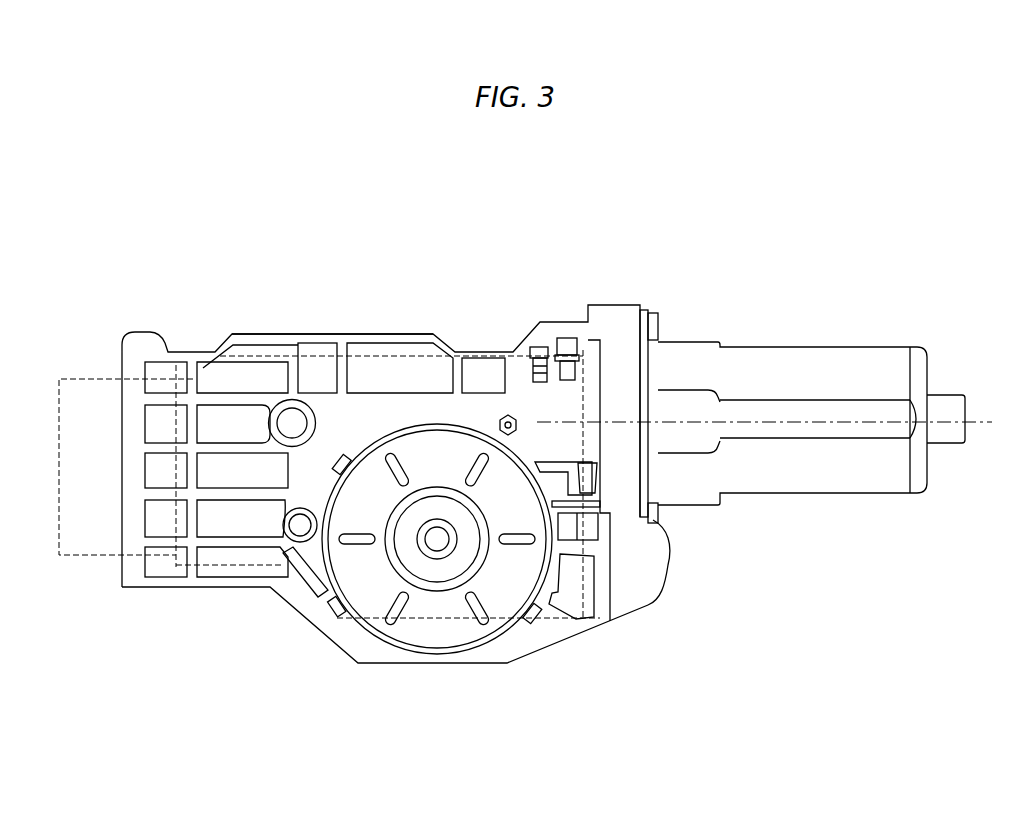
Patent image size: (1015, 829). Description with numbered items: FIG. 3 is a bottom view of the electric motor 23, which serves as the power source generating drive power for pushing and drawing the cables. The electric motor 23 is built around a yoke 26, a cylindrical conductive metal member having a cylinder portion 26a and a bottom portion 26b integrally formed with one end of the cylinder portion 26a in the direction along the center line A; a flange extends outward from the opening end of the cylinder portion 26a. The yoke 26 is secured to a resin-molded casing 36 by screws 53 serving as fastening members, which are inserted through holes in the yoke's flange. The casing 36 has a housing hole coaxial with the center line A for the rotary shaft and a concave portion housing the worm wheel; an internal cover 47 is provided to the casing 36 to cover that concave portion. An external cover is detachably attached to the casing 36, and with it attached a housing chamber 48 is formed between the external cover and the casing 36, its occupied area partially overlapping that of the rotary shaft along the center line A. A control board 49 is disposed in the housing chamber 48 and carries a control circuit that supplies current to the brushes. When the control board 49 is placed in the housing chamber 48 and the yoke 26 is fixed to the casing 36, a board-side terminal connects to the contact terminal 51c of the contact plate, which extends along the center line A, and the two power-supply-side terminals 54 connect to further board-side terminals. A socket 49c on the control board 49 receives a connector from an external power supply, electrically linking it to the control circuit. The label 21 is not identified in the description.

The gear housing 21 is at (636, 636).
The electric motor 23 is at (759, 282).
The yoke 26 is at (811, 407).
The cylinder portion 26a is at (813, 477).
The bottom portion 26b is at (925, 372).
The casing 36 is at (308, 627).
The internal cover 47 is at (508, 600).
The housing chamber 48 is at (395, 415).
The control board 49 is at (327, 351).
The socket 49c is at (102, 392).
The contact terminal 51c is at (563, 383).
The screws 53 is at (661, 327).
The power-supply-side terminals 54 is at (535, 347).
The center line A is at (983, 424).